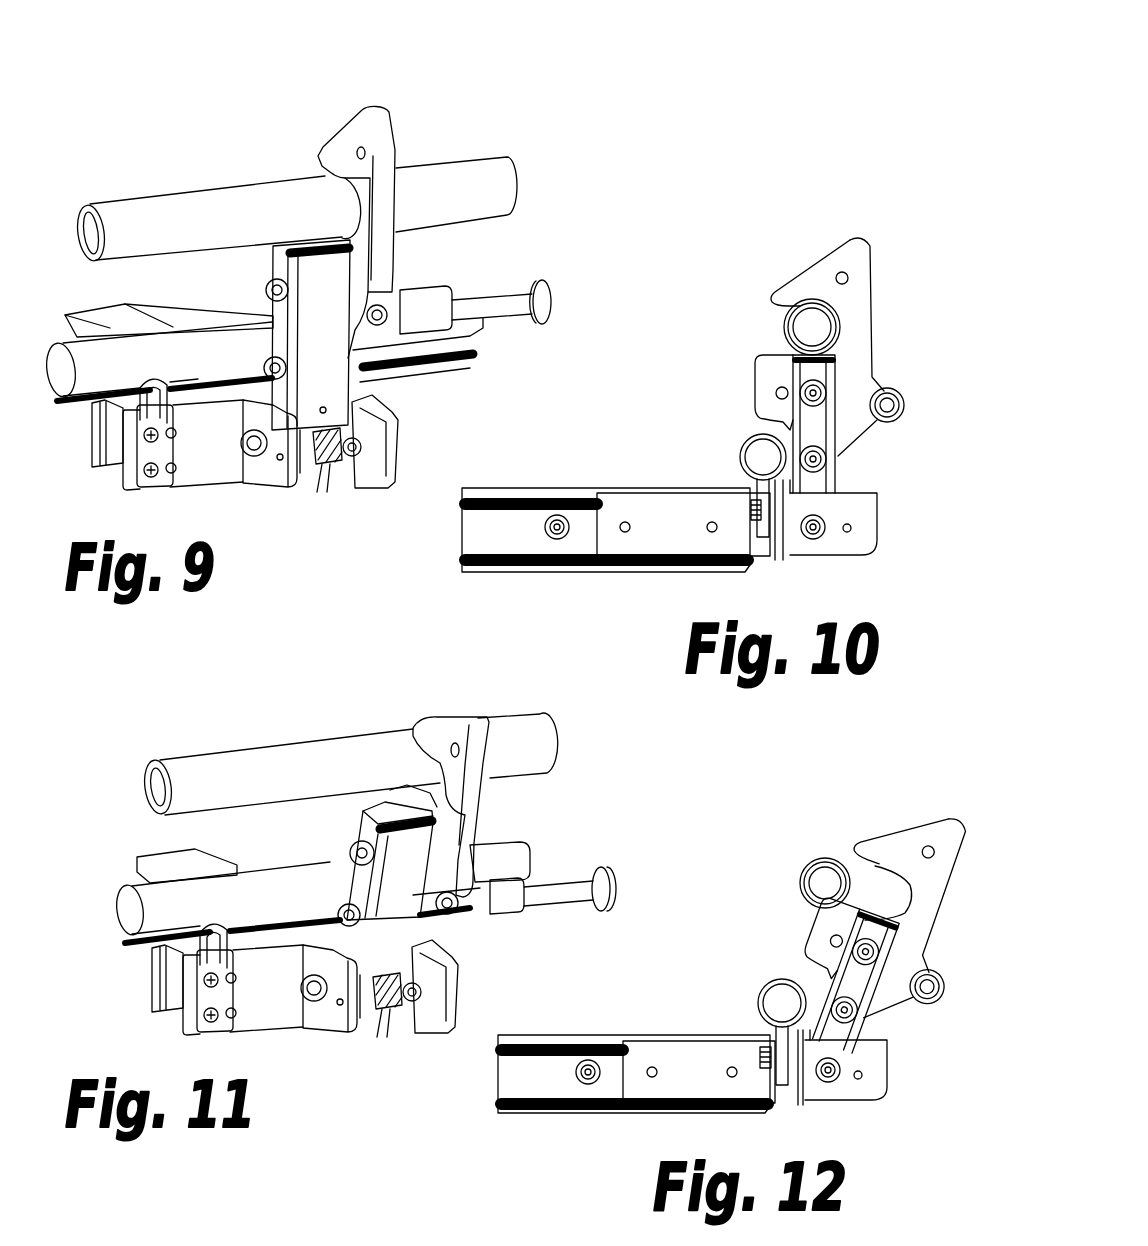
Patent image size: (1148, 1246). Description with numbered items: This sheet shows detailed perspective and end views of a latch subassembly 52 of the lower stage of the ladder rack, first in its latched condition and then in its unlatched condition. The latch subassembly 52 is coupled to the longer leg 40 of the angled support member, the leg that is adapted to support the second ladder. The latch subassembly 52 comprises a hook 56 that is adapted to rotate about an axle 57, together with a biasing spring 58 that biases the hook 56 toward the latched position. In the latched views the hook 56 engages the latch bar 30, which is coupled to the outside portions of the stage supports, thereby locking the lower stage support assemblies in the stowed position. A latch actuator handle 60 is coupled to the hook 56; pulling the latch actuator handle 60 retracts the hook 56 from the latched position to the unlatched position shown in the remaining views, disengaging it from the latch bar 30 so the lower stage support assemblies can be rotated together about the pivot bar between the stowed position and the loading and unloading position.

In FIG. 9, the latch bar 30 is at (156, 205).
In FIG. 10, the latch bar 30 is at (806, 323).
In FIG. 11, the latch bar 30 is at (300, 773).
In FIG. 12, the latch bar 30 is at (820, 880).
In FIG. 9, the longer leg 40 is at (132, 309).
In FIG. 10, the longer leg 40 is at (543, 548).
In FIG. 11, the longer leg 40 is at (227, 896).
In FIG. 12, the longer leg 40 is at (650, 1094).
In FIG. 9, the latch subassembly 52 is at (458, 116).
In FIG. 10, the latch subassembly 52 is at (880, 224).
In FIG. 11, the latch subassembly 52 is at (426, 700).
In FIG. 12, the latch subassembly 52 is at (879, 812).
In FIG. 9, the hook 56 is at (374, 110).
In FIG. 10, the hook 56 is at (818, 268).
In FIG. 11, the hook 56 is at (468, 718).
In FIG. 12, the hook 56 is at (912, 838).
In FIG. 9, the axle 57 is at (258, 456).
In FIG. 10, the axle 57 is at (813, 527).
In FIG. 11, the axle 57 is at (315, 995).
In FIG. 12, the axle 57 is at (838, 1080).
In FIG. 9, the biasing spring 58 is at (320, 453).
In FIG. 11, the biasing spring 58 is at (378, 996).
In FIG. 9, the latch actuator handle 60 is at (491, 296).
In FIG. 11, the latch actuator handle 60 is at (602, 895).